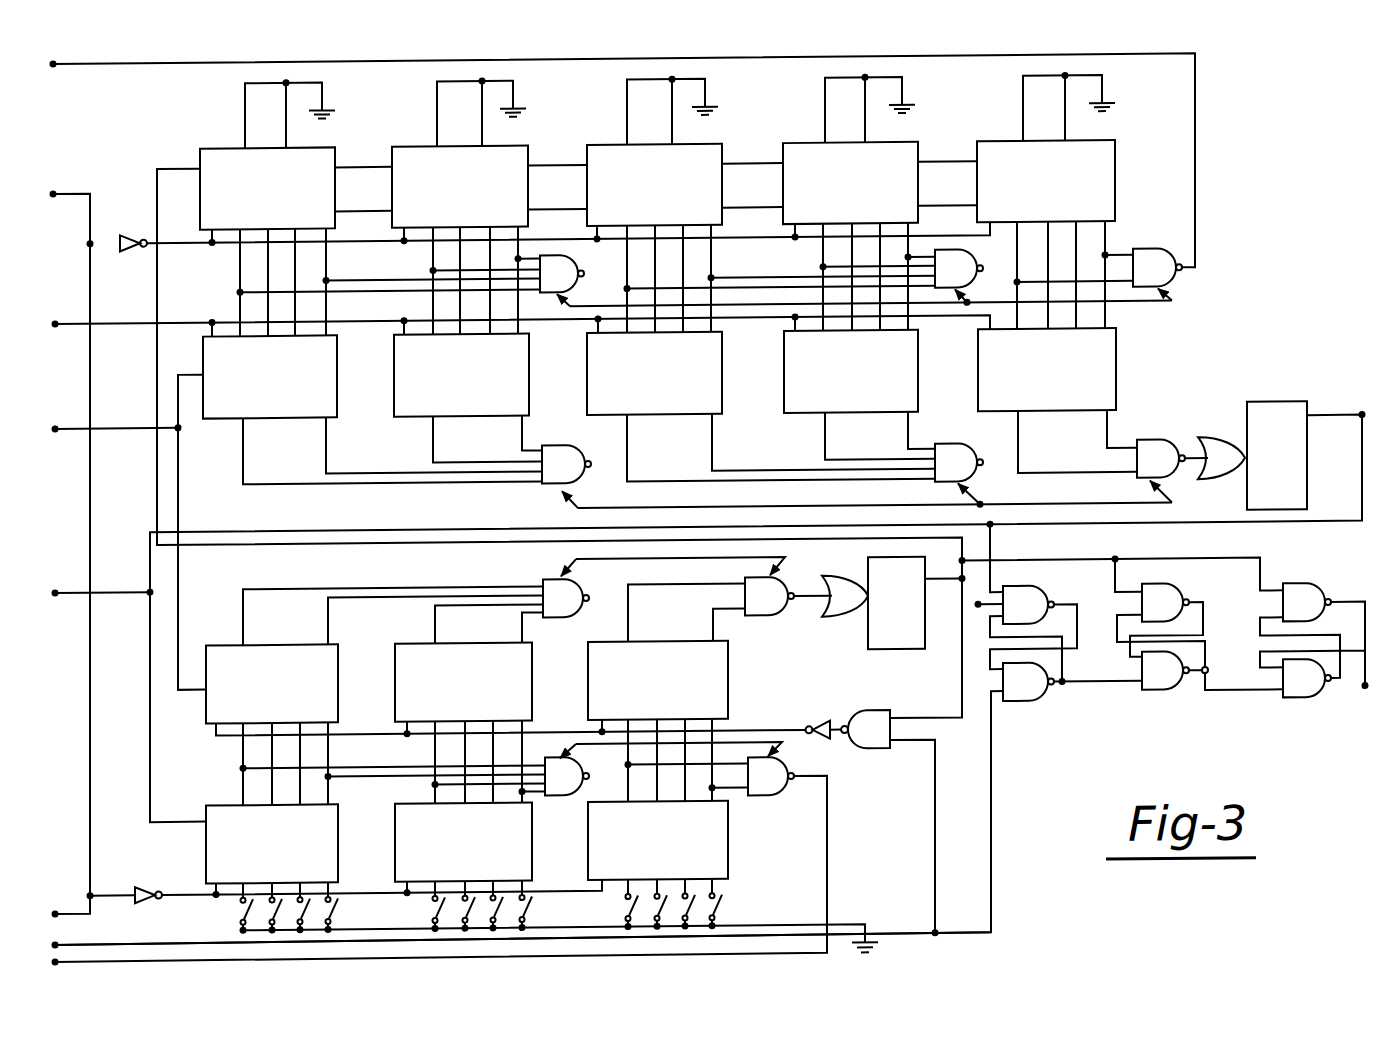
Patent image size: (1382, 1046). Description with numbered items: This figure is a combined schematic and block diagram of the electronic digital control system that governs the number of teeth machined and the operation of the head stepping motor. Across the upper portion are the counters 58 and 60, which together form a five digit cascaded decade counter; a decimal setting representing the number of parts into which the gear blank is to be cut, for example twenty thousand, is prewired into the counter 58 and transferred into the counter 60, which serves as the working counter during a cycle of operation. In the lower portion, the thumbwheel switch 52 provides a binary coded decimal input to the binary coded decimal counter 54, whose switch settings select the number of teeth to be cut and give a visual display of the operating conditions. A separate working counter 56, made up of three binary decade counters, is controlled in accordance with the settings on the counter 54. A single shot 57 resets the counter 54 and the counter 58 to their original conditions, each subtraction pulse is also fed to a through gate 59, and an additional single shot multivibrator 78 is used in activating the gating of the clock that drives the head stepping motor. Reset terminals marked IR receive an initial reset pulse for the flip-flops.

The thumbwheel switch 52 is at (777, 946).
The binary coded decimal counter 54 is at (741, 876).
The working counter 56 is at (742, 678).
The single shot 57 is at (903, 655).
The counter 58 is at (1128, 192).
The through gate 59 is at (1112, 731).
The working counter 60 is at (1130, 390).
The single shot multivibrator 78 is at (1222, 516).